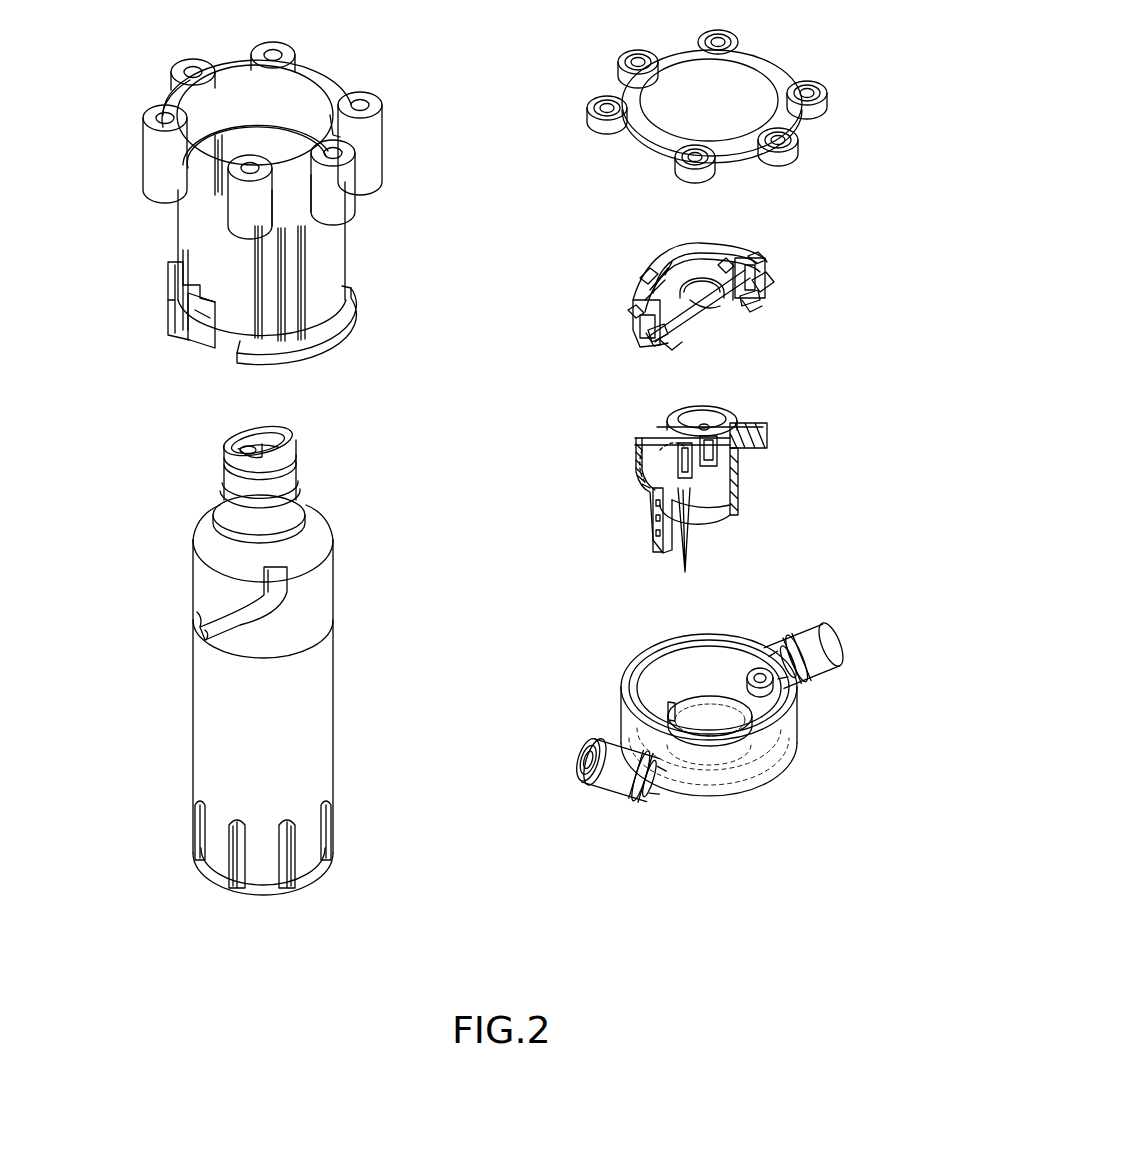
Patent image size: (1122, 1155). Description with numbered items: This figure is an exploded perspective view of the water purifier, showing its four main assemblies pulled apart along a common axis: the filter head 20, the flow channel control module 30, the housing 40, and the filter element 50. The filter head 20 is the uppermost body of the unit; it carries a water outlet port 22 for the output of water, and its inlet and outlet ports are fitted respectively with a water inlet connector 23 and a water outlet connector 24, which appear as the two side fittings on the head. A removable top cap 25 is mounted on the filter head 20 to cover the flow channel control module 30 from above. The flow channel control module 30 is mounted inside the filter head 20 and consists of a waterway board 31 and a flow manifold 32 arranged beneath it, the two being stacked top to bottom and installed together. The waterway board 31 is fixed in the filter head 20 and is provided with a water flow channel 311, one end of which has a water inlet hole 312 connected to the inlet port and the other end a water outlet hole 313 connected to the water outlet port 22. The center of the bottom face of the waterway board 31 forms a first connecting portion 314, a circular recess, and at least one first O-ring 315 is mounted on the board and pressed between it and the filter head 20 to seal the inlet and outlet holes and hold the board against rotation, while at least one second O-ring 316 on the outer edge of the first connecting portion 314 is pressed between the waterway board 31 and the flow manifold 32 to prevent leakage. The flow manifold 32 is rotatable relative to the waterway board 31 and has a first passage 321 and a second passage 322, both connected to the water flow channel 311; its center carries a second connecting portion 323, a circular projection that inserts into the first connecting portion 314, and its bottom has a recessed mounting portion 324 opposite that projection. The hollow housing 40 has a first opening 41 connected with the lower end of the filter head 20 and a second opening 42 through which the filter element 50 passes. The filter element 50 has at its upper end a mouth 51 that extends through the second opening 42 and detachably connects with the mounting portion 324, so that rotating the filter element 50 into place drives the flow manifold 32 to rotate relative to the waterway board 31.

The filter head 20 is at (716, 737).
The water outlet port 22 is at (752, 668).
The water inlet connector 23 is at (613, 753).
The water outlet connector 24 is at (813, 632).
The removable top cap 25 is at (760, 58).
The flow channel control module 30 is at (736, 405).
The waterway board 31 is at (704, 306).
The water flow channel 311 is at (767, 303).
The water inlet hole 312 is at (655, 343).
The water outlet hole 313 is at (763, 280).
The first connecting portion 314 is at (715, 312).
The first O-ring 315 is at (649, 268).
The second O-ring 316 is at (747, 303).
The flow manifold 32 is at (694, 494).
The first passage 321 is at (707, 467).
The second passage 322 is at (733, 423).
The second connecting portion 323 is at (723, 403).
The mounting portion 324 is at (700, 503).
The housing 40 is at (241, 208).
The first opening 41 is at (257, 138).
The second opening 42 is at (308, 360).
The filter element 50 is at (231, 658).
The mouth 51 is at (220, 472).